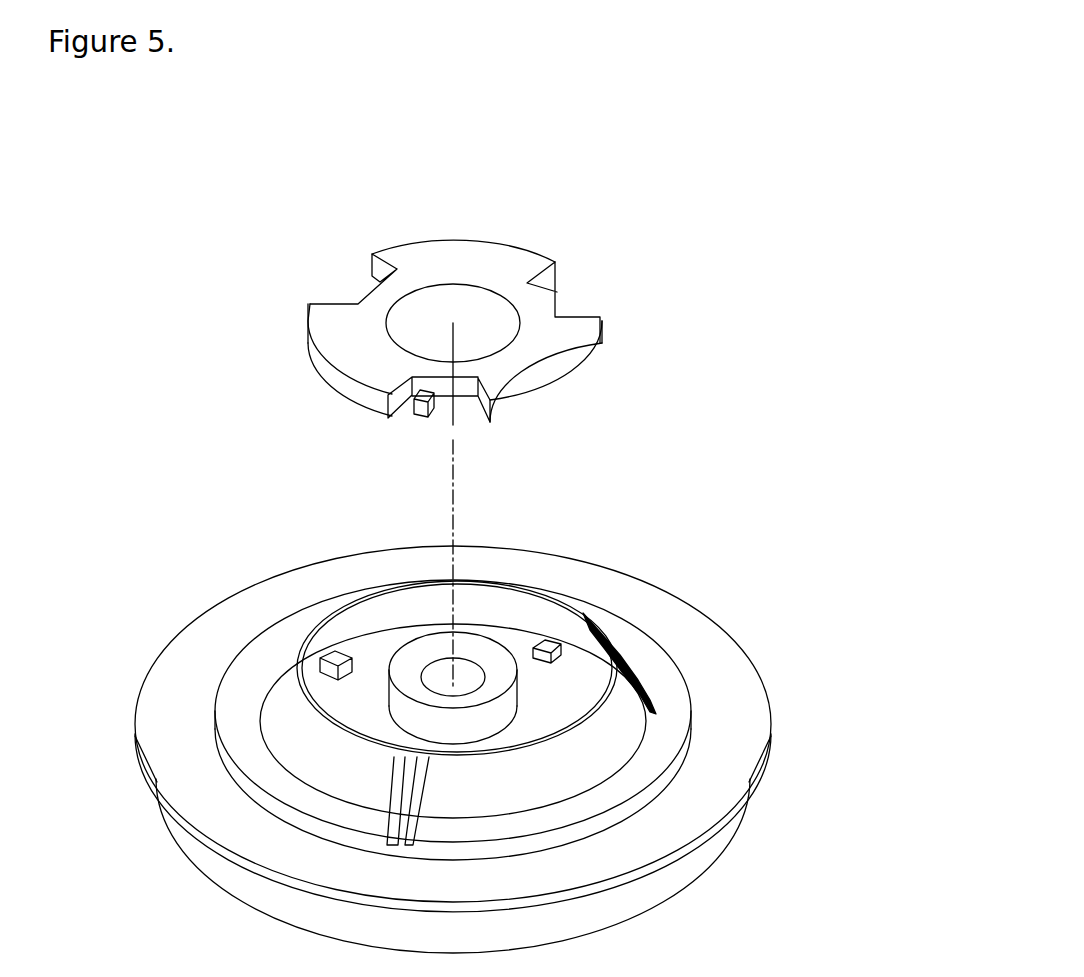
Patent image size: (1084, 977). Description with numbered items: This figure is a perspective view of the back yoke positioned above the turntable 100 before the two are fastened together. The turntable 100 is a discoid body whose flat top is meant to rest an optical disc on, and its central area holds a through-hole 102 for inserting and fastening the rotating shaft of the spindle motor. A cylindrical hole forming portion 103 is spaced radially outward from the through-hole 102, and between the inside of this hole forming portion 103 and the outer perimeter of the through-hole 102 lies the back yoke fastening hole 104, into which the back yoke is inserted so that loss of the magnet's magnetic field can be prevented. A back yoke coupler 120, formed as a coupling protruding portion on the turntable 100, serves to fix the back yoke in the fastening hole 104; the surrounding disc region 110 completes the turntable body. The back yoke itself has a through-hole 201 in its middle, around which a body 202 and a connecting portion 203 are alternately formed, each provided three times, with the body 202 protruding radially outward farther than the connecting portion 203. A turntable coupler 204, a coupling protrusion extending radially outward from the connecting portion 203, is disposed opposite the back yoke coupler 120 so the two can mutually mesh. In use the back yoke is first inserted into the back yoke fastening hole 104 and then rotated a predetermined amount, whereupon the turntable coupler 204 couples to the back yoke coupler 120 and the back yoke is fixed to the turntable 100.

The turntable 100 is at (529, 694).
The through-hole 102 is at (416, 666).
The hole forming portion 103 is at (605, 751).
The back yoke fastening hole 104 is at (558, 704).
The base disk 110 is at (752, 740).
The back yoke coupler 120 is at (585, 617).
The through-hole 201 is at (413, 332).
The body 202 is at (573, 356).
The connecting portion 203 is at (535, 308).
The turntable coupler 204 is at (410, 397).